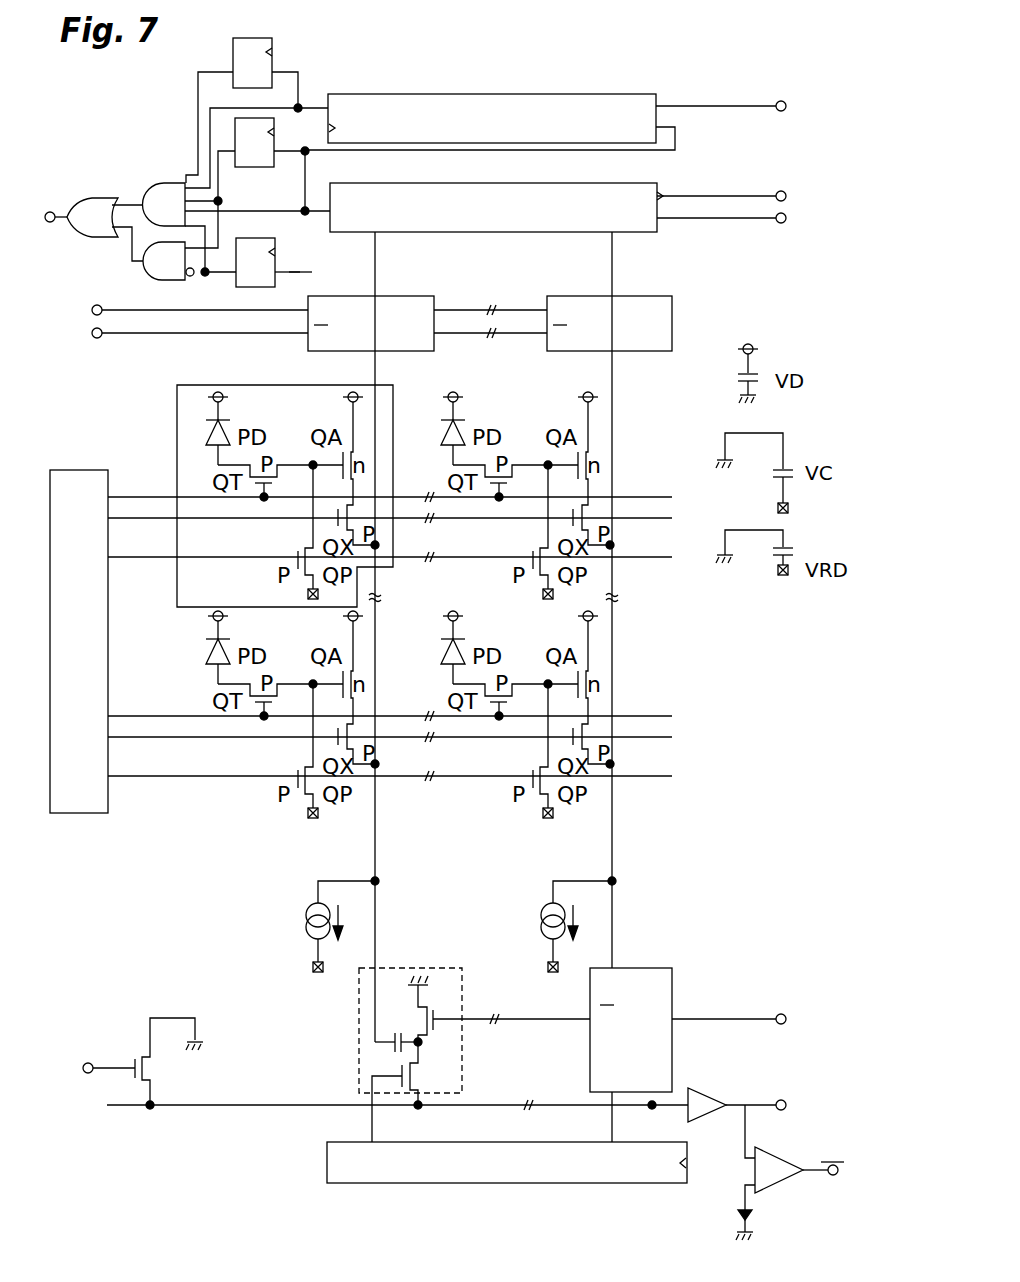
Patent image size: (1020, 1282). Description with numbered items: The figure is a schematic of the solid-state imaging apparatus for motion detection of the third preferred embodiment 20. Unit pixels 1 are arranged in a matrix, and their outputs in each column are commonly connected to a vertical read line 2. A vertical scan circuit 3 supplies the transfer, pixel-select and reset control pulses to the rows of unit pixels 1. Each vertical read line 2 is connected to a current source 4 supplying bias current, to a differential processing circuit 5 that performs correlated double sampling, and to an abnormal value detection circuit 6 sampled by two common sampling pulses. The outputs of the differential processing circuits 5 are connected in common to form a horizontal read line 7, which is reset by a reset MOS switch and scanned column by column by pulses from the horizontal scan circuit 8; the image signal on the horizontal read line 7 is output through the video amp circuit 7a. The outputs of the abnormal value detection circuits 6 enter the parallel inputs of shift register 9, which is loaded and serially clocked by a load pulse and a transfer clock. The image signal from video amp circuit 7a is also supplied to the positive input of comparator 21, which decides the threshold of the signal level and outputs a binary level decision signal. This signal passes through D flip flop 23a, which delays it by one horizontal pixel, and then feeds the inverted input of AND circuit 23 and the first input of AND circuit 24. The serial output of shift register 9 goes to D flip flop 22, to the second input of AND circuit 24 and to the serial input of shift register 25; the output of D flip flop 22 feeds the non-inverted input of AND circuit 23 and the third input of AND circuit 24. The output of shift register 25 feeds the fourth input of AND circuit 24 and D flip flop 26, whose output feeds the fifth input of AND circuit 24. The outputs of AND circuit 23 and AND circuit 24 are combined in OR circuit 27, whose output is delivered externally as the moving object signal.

The unit pixel 1 is at (390, 385).
The vertical read line 2 is at (380, 425).
The vertical scan circuit 3 is at (95, 470).
The current source 4 is at (306, 930).
The differential processing circuit 5 is at (358, 1035).
The abnormal value detection circuit 6 is at (358, 323).
The horizontal read line 7 is at (235, 1102).
The video amp circuit 7a is at (705, 1090).
The horizontal scan circuit 8 is at (327, 1165).
The shift register 9 is at (608, 183).
The third preferred embodiment 20 is at (341, 88).
The comparator 21 is at (768, 1195).
The D flip flop 22 is at (262, 167).
The AND circuit 23 is at (155, 280).
The D flip flop 23a is at (240, 287).
The AND circuit 24 is at (168, 183).
The shift register 25 is at (608, 94).
The D flip flop 26 is at (250, 38).
The OR circuit 27 is at (97, 198).